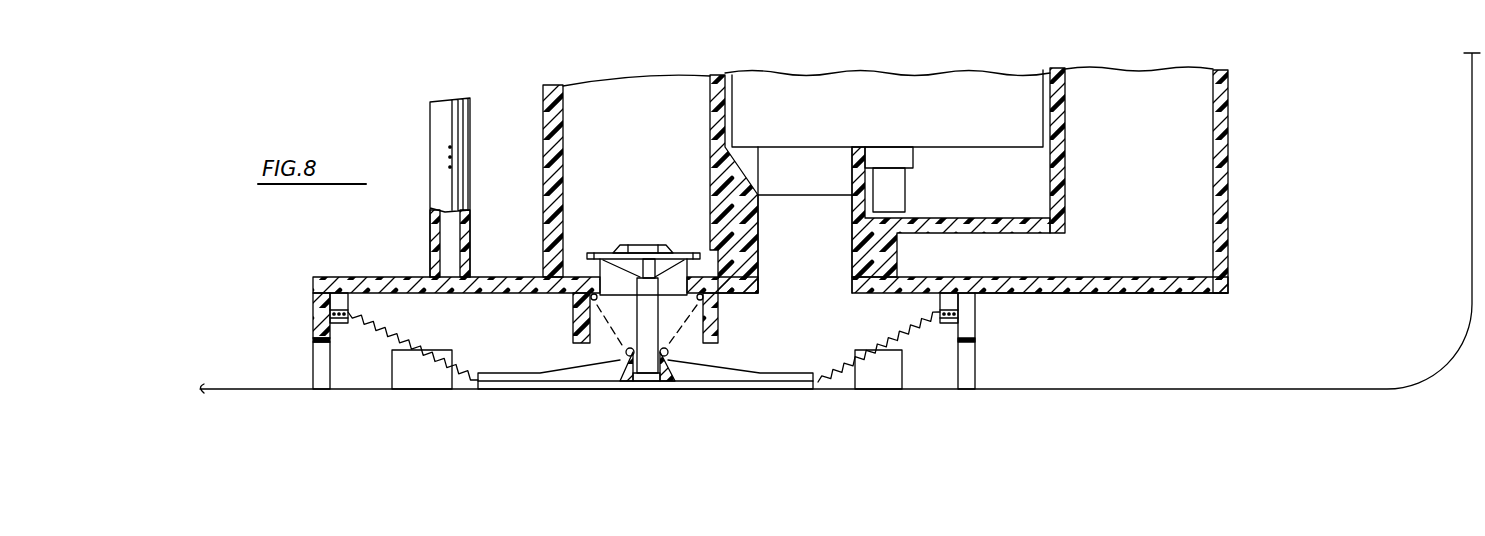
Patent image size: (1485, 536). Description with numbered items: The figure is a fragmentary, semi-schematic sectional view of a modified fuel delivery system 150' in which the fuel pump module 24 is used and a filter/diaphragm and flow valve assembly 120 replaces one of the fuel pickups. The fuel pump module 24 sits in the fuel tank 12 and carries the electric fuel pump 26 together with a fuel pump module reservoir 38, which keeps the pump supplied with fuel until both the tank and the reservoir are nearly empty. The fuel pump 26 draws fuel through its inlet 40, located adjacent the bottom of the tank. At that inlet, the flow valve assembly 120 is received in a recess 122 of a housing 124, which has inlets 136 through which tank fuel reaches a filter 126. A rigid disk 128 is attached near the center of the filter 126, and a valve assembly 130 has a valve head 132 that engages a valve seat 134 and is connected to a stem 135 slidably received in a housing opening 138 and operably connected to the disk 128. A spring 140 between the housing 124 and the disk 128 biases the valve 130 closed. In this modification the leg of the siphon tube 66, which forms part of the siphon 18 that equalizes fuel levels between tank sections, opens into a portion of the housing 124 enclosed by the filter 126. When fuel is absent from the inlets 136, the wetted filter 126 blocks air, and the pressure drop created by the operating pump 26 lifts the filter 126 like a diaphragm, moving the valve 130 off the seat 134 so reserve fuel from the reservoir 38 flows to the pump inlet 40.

The fuel tank 12 is at (1456, 356).
The siphon 18 is at (1228, 88).
The fuel pump module 24 is at (1237, 190).
The electric fuel pump 26 is at (1013, 82).
The fuel pump module reservoir 38 is at (572, 143).
The fuel pump inlet 40 is at (827, 283).
The siphon tube leg 66 is at (473, 117).
The filter/diaphragm and flow valve assembly 120 is at (590, 395).
The recess 122 is at (933, 378).
The housing 124 is at (318, 318).
The filter 126 is at (410, 342).
The rigid disk 128 is at (777, 380).
The valve assembly 130 is at (675, 278).
The valve head 132 is at (632, 245).
The valve seat 134 is at (588, 258).
The stem 135 is at (660, 335).
The inlets 136 is at (318, 357).
The housing opening 138 is at (660, 302).
The spring 140 is at (620, 336).
The modified fuel delivery system 150' is at (763, 33).